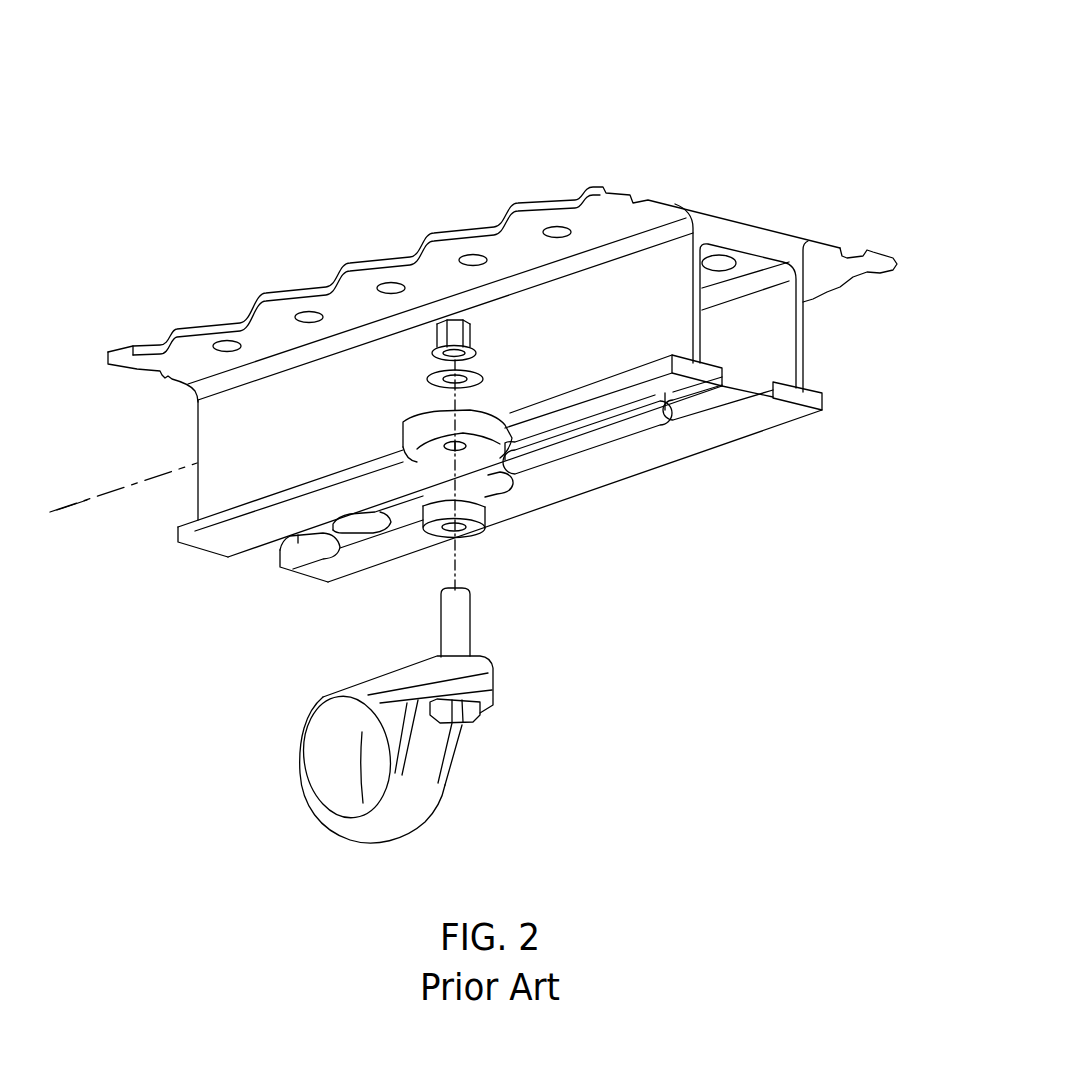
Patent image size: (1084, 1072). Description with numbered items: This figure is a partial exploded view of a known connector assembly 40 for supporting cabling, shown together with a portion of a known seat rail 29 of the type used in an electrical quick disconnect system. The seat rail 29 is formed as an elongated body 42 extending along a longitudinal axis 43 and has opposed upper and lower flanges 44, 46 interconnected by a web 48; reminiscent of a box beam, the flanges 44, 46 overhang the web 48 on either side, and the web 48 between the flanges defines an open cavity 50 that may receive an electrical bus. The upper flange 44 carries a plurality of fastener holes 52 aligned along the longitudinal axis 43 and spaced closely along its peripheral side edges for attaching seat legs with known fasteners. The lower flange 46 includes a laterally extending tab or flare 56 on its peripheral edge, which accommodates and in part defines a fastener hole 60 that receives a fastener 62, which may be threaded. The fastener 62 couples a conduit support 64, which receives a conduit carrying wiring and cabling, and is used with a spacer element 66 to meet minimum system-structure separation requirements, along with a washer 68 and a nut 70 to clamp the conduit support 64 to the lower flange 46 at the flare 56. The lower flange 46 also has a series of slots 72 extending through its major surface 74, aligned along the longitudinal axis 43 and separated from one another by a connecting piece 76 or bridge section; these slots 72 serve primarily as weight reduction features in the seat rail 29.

The connector assembly 40 is at (512, 95).
The elongated body 42 is at (694, 207).
The upper flange 44 is at (451, 234).
The lower flange 46 is at (777, 428).
The web 48 is at (803, 333).
The open cavity 50 is at (768, 363).
The fastener holes 52 is at (310, 314).
The flare 56 is at (401, 438).
The fastener hole 60 is at (508, 437).
The fastener 62 is at (470, 625).
The conduit support 64 is at (428, 800).
The spacer element 66 is at (430, 530).
The washer 68 is at (428, 378).
The nut 70 is at (473, 322).
The slots 72 is at (377, 512).
The major surface 74 is at (722, 433).
The connecting piece 76 is at (500, 470).
The seat rail 29 is at (103, 393).
The longitudinal axis 43 is at (90, 498).